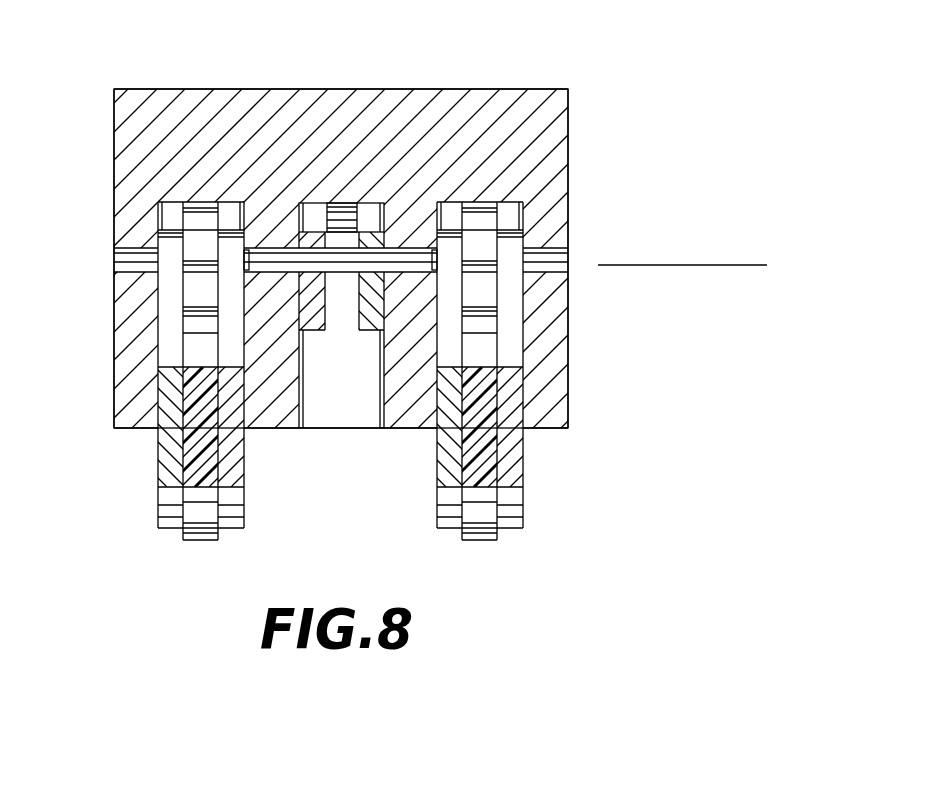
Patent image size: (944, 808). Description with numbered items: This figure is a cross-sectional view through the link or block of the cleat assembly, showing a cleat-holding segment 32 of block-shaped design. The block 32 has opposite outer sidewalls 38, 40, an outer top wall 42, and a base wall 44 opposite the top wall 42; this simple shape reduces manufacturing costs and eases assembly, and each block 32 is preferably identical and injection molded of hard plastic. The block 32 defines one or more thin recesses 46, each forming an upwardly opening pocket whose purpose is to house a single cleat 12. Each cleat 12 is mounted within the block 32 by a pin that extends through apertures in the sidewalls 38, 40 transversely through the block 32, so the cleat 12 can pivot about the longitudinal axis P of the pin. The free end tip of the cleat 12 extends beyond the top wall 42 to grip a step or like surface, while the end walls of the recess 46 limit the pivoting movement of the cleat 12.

The cleat 12 is at (195, 547).
The cleat-holding segment 32 is at (543, 128).
The outer sidewall 38 is at (114, 344).
The outer sidewall 40 is at (568, 345).
The outer top wall 42 is at (545, 432).
The base wall 44 is at (302, 90).
The recess 46 is at (337, 413).
The longitudinal axis of the pin P is at (688, 243).